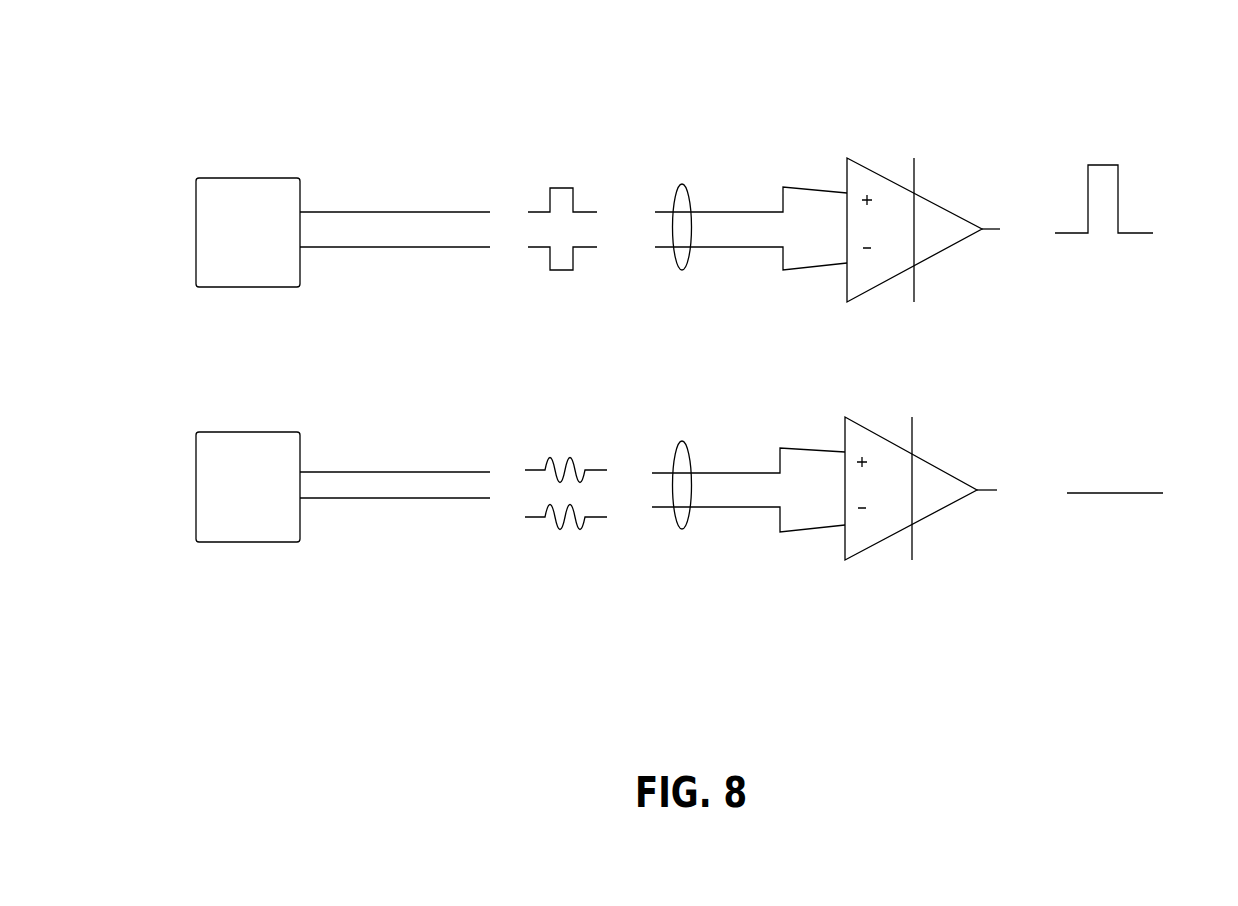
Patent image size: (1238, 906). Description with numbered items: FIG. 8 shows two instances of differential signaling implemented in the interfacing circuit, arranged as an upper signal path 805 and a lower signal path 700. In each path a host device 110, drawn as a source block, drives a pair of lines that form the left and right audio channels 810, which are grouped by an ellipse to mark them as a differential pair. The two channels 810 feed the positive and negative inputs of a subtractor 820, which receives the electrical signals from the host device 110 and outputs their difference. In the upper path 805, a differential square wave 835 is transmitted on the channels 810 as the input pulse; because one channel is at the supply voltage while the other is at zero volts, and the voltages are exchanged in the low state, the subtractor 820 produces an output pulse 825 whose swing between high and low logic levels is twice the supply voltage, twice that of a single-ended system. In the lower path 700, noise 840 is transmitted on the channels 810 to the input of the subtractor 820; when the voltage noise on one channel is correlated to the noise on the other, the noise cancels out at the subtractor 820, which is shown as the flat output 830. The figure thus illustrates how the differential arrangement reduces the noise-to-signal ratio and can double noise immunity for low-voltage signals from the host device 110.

The signal path with input pulse 805 is at (378, 100).
The host device 110 is at (243, 178).
The differential square wave 835 is at (570, 196).
The left and right audio channels 810 is at (690, 200).
The subtractor 820 is at (933, 200).
The output pulse 825 is at (1111, 163).
The signal path with noise 700 is at (498, 609).
The noise 840 is at (557, 456).
The output pulse 830 is at (1115, 470).